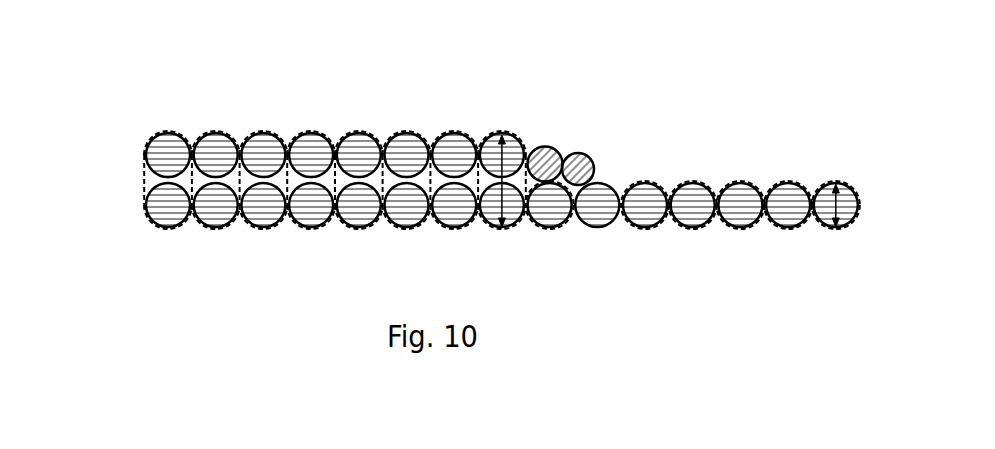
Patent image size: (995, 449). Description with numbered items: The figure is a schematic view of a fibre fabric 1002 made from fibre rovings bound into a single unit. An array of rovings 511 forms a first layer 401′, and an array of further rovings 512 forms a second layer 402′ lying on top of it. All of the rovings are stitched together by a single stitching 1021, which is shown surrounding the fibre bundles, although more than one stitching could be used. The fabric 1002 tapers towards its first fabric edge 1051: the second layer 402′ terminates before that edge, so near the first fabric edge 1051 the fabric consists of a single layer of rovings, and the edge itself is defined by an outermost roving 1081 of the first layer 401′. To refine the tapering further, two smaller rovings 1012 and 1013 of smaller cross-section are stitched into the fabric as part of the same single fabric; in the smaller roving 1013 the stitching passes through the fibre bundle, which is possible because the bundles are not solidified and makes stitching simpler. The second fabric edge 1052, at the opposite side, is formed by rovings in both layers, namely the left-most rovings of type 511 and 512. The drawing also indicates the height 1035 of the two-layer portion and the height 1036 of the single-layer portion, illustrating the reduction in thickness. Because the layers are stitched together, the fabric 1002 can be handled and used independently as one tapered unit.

The fabric 1002 is at (98, 20).
The second layer 402′ is at (136, 155).
The first layer 401′ is at (136, 205).
The further rovings 512 is at (216, 150).
The rovings 511 is at (312, 207).
The single stitching 1021 is at (502, 131).
The two-row stack height 1035 is at (507, 136).
The single-row height 1036 is at (823, 222).
The smaller roving 1012 is at (545, 148).
The smaller roving 1013 is at (592, 153).
The outermost roving 1081 is at (845, 198).
The second fabric edge 1052 is at (145, 211).
The first fabric edge 1051 is at (862, 202).